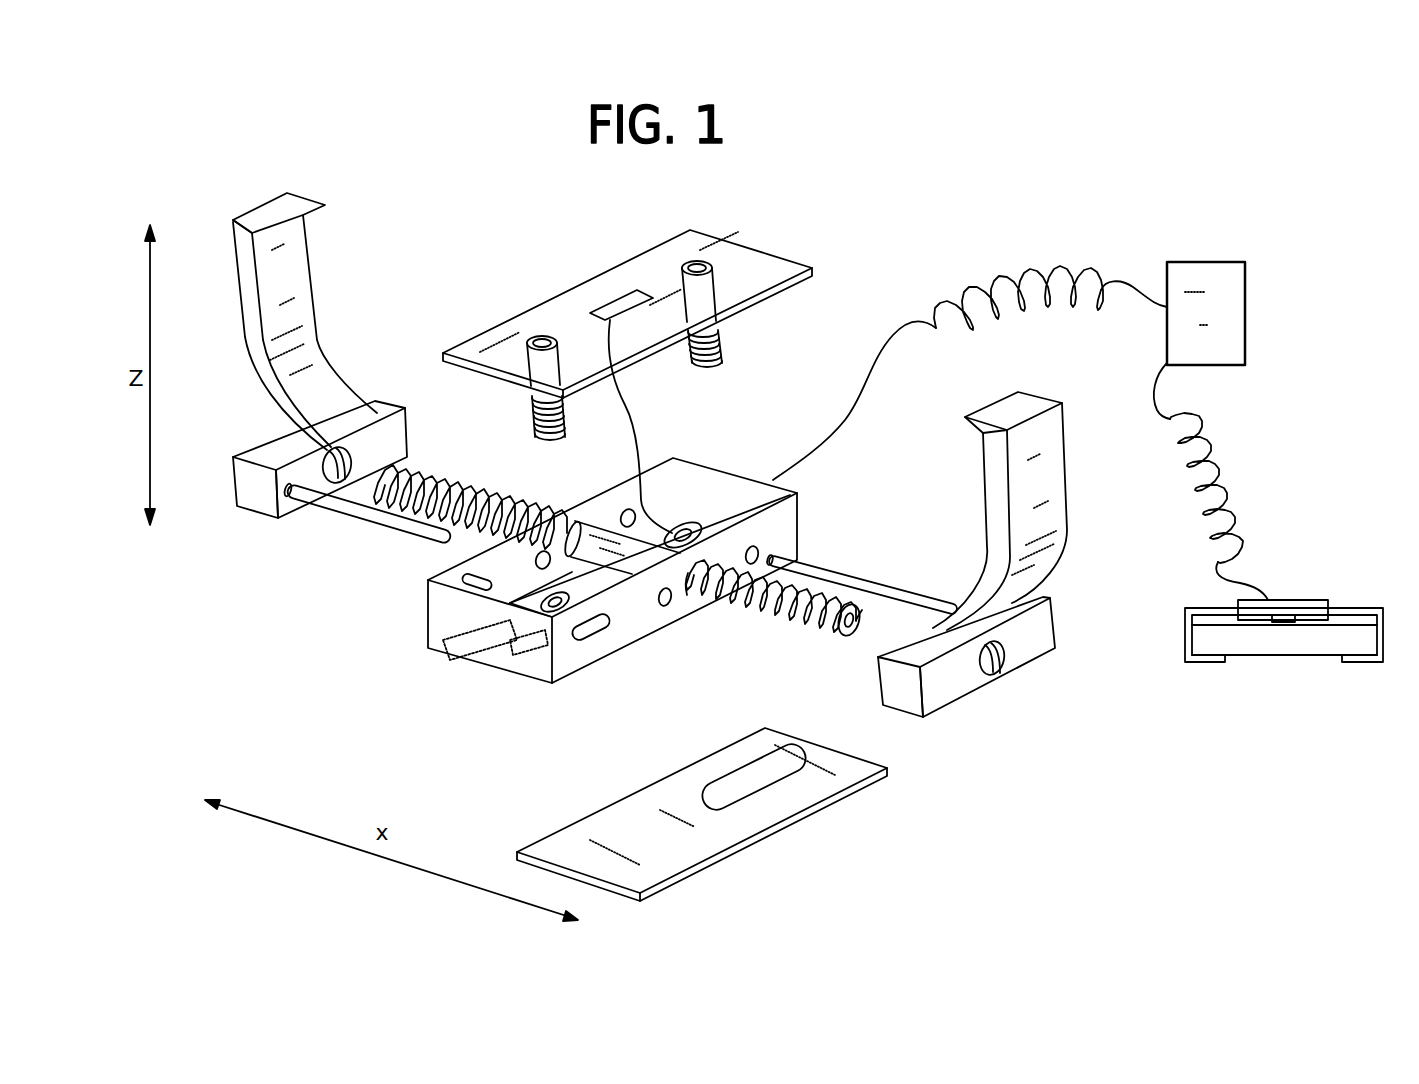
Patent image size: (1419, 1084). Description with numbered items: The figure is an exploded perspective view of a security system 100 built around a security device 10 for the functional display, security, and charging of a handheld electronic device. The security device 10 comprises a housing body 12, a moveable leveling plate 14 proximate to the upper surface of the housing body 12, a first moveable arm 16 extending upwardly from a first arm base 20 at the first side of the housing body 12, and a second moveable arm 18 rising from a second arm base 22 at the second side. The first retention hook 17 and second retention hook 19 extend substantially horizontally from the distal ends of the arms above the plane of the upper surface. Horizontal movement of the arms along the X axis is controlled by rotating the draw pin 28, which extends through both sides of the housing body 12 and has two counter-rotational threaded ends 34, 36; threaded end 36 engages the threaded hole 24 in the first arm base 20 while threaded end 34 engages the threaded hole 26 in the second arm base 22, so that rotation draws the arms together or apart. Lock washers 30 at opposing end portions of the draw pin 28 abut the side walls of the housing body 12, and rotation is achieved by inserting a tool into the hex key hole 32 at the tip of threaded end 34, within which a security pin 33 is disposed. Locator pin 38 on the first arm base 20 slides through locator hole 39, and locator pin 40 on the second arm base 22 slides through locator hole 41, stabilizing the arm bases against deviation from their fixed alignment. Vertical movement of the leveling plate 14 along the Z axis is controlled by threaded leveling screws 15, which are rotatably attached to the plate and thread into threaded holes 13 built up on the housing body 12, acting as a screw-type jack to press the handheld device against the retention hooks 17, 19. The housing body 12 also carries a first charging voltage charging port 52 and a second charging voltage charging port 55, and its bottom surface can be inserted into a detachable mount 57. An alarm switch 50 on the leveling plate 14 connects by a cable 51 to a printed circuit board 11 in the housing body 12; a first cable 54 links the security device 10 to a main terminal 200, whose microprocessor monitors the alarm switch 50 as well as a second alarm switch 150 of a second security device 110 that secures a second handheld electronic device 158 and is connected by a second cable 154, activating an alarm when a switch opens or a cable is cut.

The security device 10 is at (230, 645).
The security system 100 is at (839, 203).
The printed circuit board 11 is at (483, 668).
The housing body 12 is at (428, 628).
The threaded holes 13 is at (692, 522).
The leveling plate 14 is at (661, 258).
The threaded leveling screws 15 is at (721, 335).
The first moveable arm 16 is at (245, 336).
The first retention hook 17 is at (303, 227).
The second moveable arm 18 is at (1060, 480).
The second retention hook 19 is at (966, 420).
The first arm base 20 is at (242, 495).
The second arm base 22 is at (906, 705).
The threaded hole 24 is at (362, 460).
The threaded hole 26 is at (1006, 680).
The draw pin 28 is at (628, 585).
The lock washers 30 is at (693, 595).
The hex key hole 32 is at (871, 614).
The security pin 33 is at (850, 640).
The threaded end 34 is at (773, 620).
The threaded end 36 is at (492, 486).
The locator pin 38 is at (372, 518).
The locator hole 39 is at (536, 562).
The locator pin 40 is at (839, 570).
The locator hole 41 is at (757, 551).
The alarm switch 50 is at (601, 305).
The cable 51 is at (642, 428).
The first charging voltage charging port 52 is at (591, 648).
The first cable 54 is at (913, 312).
The second charging voltage charging port 55 is at (468, 583).
The mount 57 is at (879, 758).
The second security device 110 is at (1338, 572).
The second alarm switch 150 is at (1285, 612).
The second cable 154 is at (1192, 497).
The second handheld electronic device 158 is at (1291, 661).
The main terminal 200 is at (1205, 262).